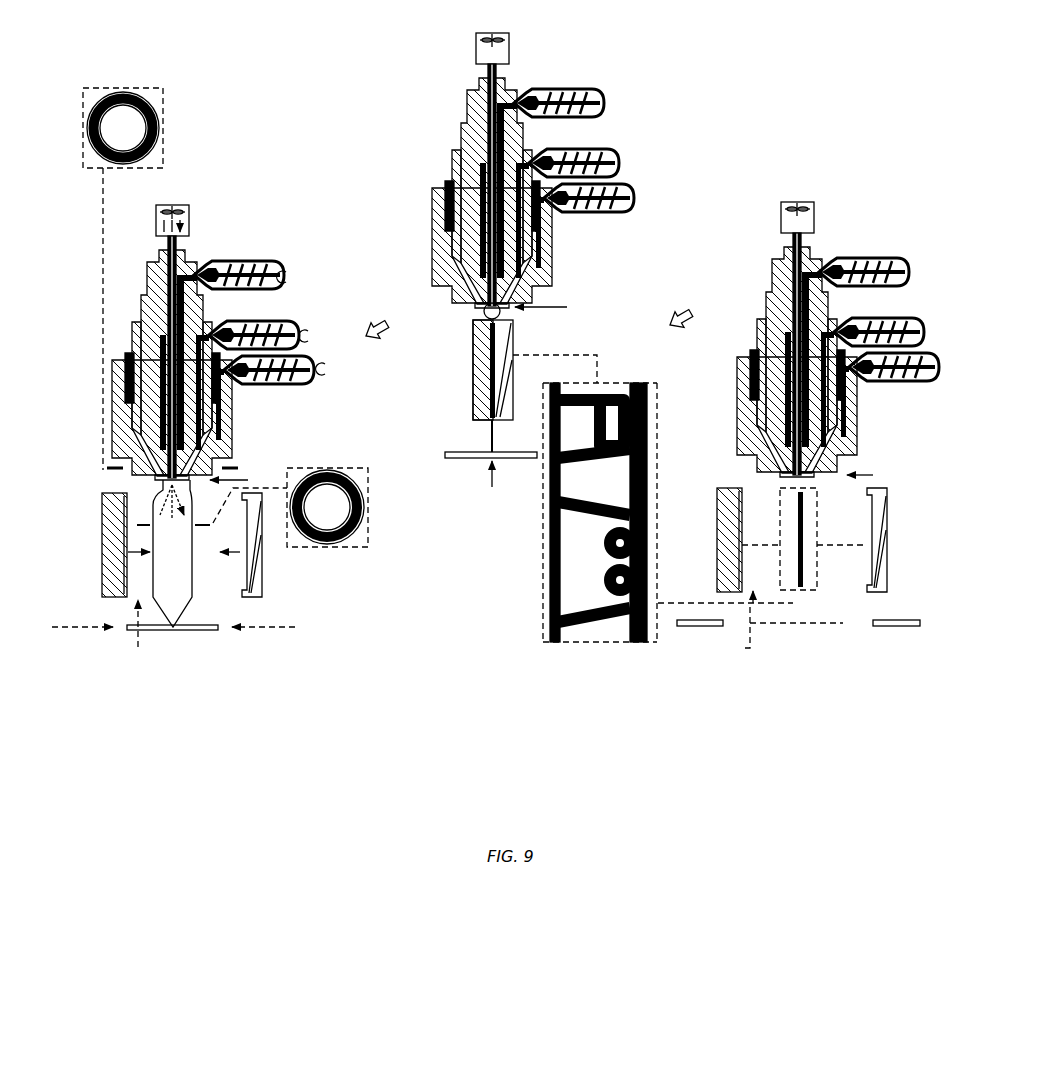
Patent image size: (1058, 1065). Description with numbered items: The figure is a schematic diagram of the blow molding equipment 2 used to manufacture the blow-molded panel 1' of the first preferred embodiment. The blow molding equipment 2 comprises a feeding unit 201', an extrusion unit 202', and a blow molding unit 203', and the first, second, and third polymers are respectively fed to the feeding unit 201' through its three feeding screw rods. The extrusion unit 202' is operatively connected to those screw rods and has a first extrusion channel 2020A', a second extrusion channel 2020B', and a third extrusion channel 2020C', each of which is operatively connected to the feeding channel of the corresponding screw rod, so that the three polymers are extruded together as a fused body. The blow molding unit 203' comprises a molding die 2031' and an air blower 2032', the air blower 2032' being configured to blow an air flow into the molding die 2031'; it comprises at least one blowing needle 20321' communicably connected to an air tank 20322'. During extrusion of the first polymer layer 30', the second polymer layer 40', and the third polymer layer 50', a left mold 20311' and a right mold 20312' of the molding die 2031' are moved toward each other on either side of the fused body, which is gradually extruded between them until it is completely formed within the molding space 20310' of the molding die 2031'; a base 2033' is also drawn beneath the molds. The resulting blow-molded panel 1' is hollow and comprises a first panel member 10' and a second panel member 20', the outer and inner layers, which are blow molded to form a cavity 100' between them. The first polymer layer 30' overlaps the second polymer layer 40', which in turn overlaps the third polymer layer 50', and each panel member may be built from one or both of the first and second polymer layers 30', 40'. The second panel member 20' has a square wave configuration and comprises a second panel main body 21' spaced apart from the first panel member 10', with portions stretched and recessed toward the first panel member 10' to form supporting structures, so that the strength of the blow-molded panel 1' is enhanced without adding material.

The blow-molded panel 1' is at (582, 513).
The blow molding equipment 2 is at (143, 248).
The first panel member 10' is at (670, 512).
The second panel member 20' is at (521, 512).
The second panel main body 21' is at (570, 511).
The first polymer layer 30' is at (606, 580).
The second polymer layer 40' is at (606, 562).
The third polymer layer 50' is at (606, 550).
The cavity 100' is at (667, 512).
The feeding unit 201' is at (270, 346).
The extrusion unit 202' is at (129, 362).
The blow molding unit 203' is at (204, 562).
The first extrusion channel 2020A' is at (138, 420).
The second extrusion channel 2020B' is at (128, 378).
The third extrusion channel 2020C' is at (132, 375).
The molding die 2031' is at (204, 558).
The air blower 2032' is at (250, 322).
The base plate 2033' is at (173, 633).
The molding space 20310' is at (148, 628).
The left mold 20311' is at (87, 558).
The right mold 20312' is at (283, 557).
The blowing needle 20321' is at (226, 347).
The air tank 20322' is at (208, 207).